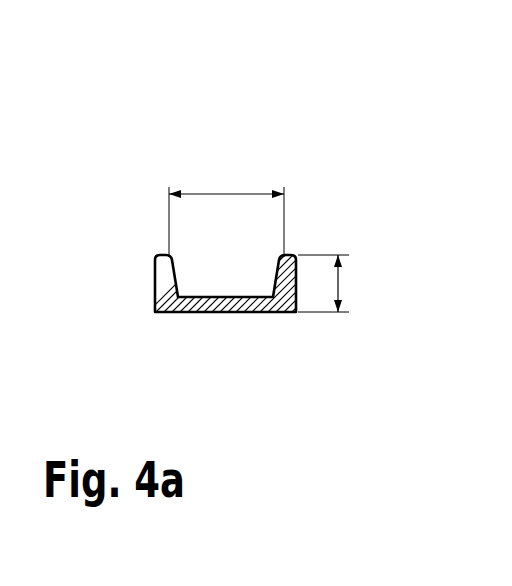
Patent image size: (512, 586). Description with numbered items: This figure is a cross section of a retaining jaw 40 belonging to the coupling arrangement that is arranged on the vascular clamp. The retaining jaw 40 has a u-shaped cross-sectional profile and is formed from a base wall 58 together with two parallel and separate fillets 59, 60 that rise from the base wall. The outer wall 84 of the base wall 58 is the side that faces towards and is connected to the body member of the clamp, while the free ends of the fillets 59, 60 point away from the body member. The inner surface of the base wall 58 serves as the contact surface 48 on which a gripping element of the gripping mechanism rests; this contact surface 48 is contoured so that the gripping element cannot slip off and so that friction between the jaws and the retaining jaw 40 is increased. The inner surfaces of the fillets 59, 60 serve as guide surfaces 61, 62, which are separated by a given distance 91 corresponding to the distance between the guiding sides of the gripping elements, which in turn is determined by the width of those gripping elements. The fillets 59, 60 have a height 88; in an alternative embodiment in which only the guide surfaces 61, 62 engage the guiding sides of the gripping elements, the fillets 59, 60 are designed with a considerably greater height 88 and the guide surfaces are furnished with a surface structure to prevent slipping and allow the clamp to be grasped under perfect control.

The retaining jaw 40 is at (378, 140).
The contact surface 48 is at (200, 292).
The base wall 58 is at (200, 292).
The fillet 59 is at (200, 292).
The fillet 60 is at (200, 292).
The guide surface 61 is at (200, 284).
The guide surface 62 is at (200, 284).
The outer wall 84 is at (179, 316).
The height 88 is at (339, 282).
The distance 91 is at (218, 194).